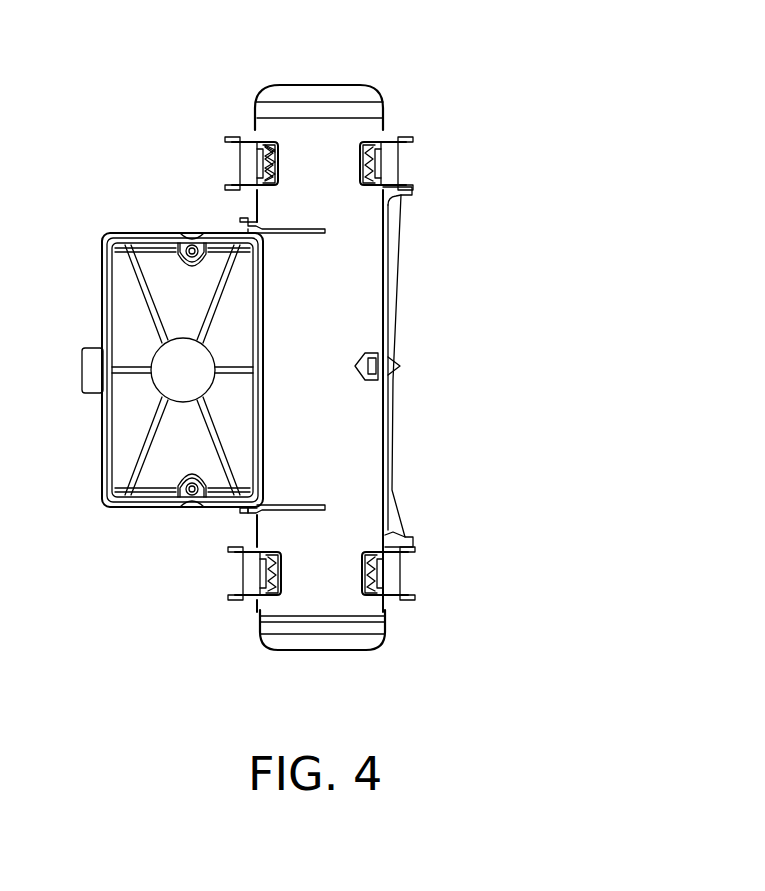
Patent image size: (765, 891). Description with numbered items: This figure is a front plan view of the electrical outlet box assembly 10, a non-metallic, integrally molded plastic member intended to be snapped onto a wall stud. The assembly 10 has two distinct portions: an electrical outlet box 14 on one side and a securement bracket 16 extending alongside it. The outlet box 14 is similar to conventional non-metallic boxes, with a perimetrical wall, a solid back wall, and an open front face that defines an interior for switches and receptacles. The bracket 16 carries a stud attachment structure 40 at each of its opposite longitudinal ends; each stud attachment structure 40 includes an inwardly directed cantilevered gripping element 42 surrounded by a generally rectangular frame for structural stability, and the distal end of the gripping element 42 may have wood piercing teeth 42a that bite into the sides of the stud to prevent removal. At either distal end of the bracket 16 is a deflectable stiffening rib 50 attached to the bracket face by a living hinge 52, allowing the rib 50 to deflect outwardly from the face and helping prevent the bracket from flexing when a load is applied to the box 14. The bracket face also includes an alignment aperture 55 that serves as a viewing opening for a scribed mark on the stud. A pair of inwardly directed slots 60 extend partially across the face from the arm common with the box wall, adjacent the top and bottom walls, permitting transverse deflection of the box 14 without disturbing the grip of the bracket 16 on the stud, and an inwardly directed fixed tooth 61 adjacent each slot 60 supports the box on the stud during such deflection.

The electrical outlet box assembly 10 is at (503, 183).
The electrical outlet box 14 is at (135, 235).
The securement bracket 16 is at (362, 308).
The stud attachment structure 40 is at (240, 165).
The cantilevered gripping element 42 is at (393, 150).
The wood piercing teeth 42a is at (268, 148).
The deflectable stiffening rib 50 is at (326, 100).
The living hinge 52 is at (350, 622).
The alignment aperture 55 is at (370, 366).
The slot 60 is at (314, 235).
The fixed tooth 61 is at (245, 220).